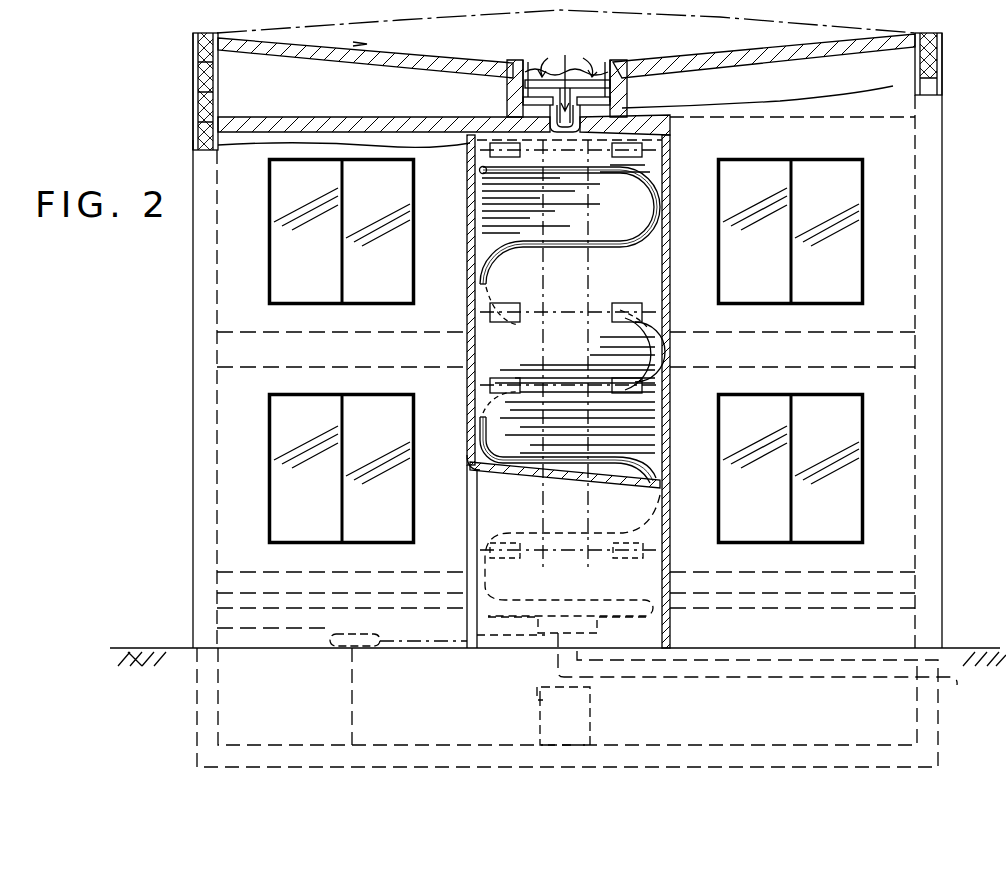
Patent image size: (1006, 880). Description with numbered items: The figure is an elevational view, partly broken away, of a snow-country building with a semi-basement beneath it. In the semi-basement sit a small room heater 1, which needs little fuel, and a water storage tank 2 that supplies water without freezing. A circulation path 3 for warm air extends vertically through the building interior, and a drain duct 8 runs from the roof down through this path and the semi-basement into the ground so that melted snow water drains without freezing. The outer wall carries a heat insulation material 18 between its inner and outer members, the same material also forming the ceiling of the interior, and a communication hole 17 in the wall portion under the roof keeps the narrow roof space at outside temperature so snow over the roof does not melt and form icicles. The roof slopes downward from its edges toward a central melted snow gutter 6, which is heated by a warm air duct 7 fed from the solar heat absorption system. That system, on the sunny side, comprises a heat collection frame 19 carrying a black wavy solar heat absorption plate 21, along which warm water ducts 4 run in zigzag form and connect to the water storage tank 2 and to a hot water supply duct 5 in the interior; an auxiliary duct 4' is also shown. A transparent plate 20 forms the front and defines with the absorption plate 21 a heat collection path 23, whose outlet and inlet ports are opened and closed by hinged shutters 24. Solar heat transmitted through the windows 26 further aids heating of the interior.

The small room heater 1 is at (577, 718).
The water storage tank 2 is at (250, 711).
The circulation path 3 is at (490, 110).
The warm water ducts 4 is at (589, 399).
The auxiliary duct 4' is at (568, 339).
The hot water supply duct 5 is at (430, 642).
The melted snow gutter 6 is at (566, 73).
The warm air duct 7 is at (512, 100).
The drain duct 8 is at (650, 695).
The communication hole 17 is at (195, 89).
The heat insulation material 18 is at (200, 132).
The heat collection frame 19 is at (661, 289).
The transparent plate 20 is at (503, 615).
The solar heat absorption plate 21 is at (493, 208).
The heat collection path 23 is at (472, 327).
The hinged shutters 24 is at (640, 150).
The windows 26 is at (416, 270).